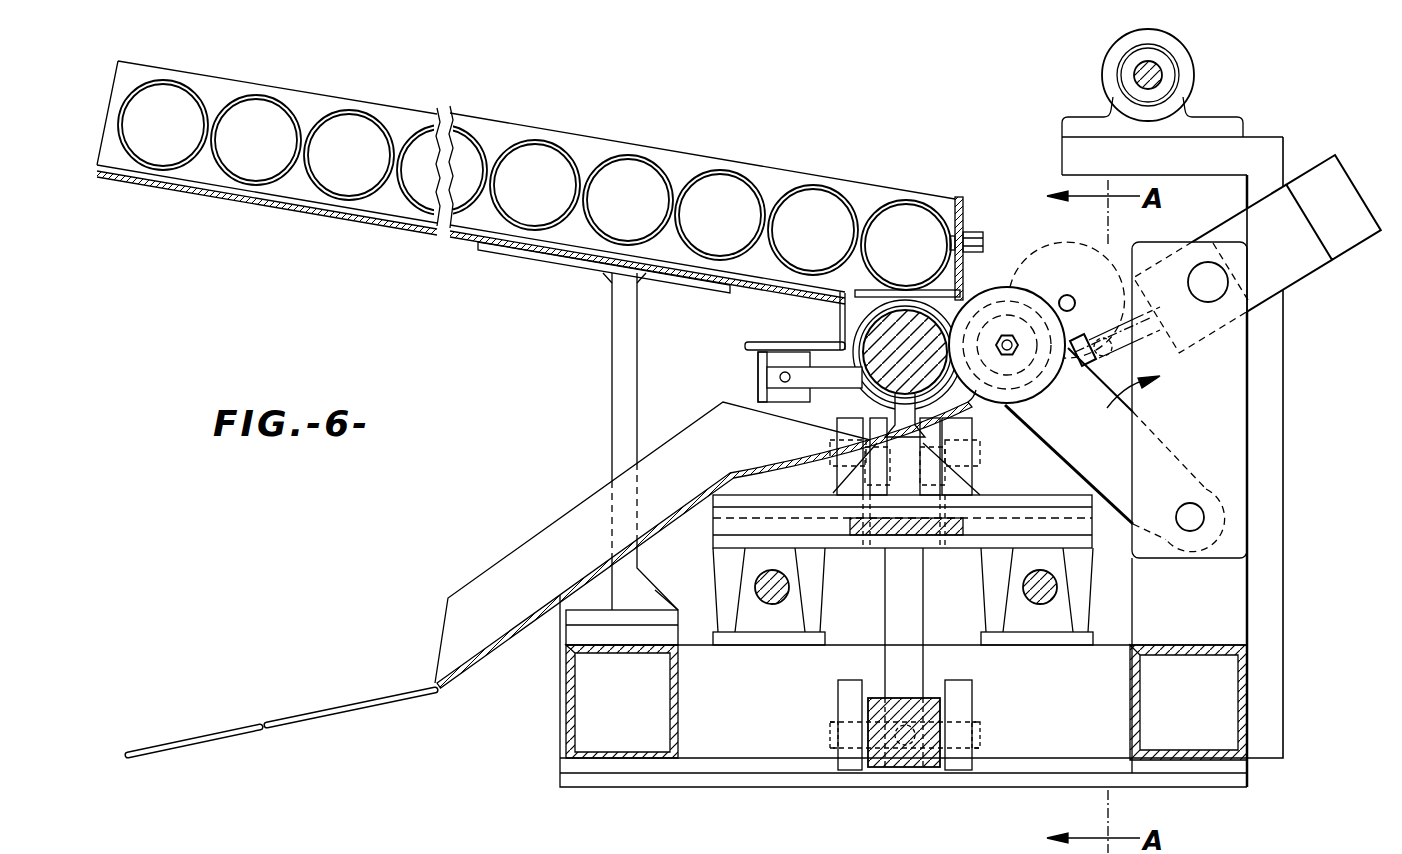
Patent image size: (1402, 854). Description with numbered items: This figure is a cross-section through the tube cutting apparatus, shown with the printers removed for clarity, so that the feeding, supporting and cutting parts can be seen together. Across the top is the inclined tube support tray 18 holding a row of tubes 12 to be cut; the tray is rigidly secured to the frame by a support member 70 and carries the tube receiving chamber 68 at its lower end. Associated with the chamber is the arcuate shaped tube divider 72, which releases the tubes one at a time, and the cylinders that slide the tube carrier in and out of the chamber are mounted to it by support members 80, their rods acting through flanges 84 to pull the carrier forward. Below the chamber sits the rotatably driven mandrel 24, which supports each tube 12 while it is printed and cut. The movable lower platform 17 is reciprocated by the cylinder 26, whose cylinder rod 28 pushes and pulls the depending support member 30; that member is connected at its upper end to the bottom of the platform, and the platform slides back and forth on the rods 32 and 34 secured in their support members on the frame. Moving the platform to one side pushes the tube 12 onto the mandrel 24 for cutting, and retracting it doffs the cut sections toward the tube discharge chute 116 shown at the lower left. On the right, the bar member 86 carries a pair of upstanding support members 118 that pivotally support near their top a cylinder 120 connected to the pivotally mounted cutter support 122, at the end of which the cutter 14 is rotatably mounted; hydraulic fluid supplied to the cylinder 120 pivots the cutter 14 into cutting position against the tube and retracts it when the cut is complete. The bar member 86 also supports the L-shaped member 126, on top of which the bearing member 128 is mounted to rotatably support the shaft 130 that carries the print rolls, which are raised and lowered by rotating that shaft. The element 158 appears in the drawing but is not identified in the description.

The tube 12 is at (259, 103).
The cutter 14 is at (980, 302).
The movable lower platform 17 is at (868, 540).
The tube support tray 18 is at (362, 225).
The mandrel 24 is at (903, 312).
The cylinder 26 is at (892, 770).
The cylinder rod 28 is at (905, 700).
The depending support member 30 is at (925, 568).
The rod 32 is at (1030, 590).
The rod 34 is at (780, 587).
The tube receiving chamber 68 is at (843, 330).
The support member 70 is at (618, 332).
The arcuate shaped tube divider 72 is at (862, 280).
The support member 80 is at (760, 378).
The flange 84 is at (822, 380).
The bar member 86 is at (1138, 688).
The tube discharge chute 116 is at (538, 545).
The upstanding support member 118 is at (1242, 355).
The cylinder 120 is at (1334, 160).
The cutter support 122 is at (1066, 455).
The L-shaped member 126 is at (1275, 426).
The bearing member 128 is at (1193, 78).
The shaft 130 is at (1140, 70).
The adjusting screw 158 is at (984, 240).